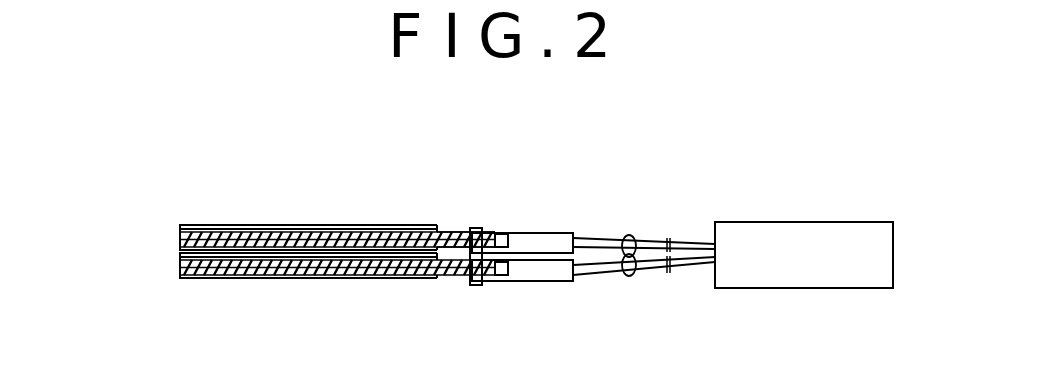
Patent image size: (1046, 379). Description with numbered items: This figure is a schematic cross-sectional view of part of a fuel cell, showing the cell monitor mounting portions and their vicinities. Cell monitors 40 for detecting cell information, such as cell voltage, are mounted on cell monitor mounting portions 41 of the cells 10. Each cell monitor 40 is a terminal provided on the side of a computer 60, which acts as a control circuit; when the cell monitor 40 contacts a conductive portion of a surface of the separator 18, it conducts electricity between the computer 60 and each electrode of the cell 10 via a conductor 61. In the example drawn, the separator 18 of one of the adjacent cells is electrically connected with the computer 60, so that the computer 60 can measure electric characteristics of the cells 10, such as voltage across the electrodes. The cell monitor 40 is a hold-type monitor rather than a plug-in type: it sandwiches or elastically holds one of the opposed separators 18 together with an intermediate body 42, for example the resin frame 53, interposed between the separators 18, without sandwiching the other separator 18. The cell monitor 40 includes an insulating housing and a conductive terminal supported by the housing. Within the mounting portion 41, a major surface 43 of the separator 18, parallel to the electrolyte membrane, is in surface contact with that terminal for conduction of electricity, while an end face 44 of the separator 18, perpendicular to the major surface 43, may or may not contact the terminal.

The cell 10 is at (174, 225).
The resin frame 53 is at (293, 243).
The cell monitor mounting portion 41 is at (498, 153).
The intermediate body 42 is at (443, 233).
The separator 18 is at (463, 236).
The end face 44 is at (505, 233).
The major surface 43 is at (482, 285).
The cell monitor 40 is at (575, 233).
The conductor 61 is at (630, 236).
The computer 60 is at (757, 222).